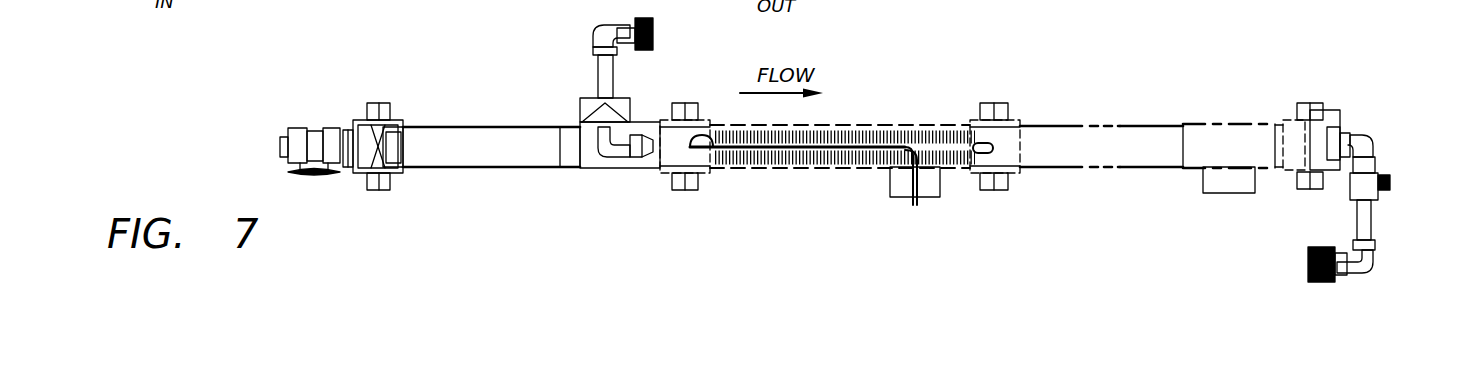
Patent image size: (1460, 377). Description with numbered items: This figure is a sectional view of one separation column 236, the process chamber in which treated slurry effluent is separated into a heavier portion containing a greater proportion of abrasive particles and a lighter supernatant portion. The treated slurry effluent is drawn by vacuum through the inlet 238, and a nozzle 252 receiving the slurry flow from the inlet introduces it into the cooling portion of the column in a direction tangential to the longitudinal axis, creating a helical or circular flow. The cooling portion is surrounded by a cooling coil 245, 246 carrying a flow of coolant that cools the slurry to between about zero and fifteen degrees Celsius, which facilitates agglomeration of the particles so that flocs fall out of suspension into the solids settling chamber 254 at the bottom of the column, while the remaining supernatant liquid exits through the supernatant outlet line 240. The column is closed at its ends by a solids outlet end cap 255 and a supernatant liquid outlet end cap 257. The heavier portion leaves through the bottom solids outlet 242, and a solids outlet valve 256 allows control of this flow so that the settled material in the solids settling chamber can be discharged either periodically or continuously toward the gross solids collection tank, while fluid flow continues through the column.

The separation column 236 is at (972, 82).
The inlet 238 is at (595, 35).
The supernatant outlet line 240 is at (1375, 226).
The bottom solids outlet 242 is at (348, 130).
The spring 245 is at (852, 118).
The rod 246 is at (832, 168).
The nozzle 252 is at (640, 160).
The solids settling chamber 254 is at (472, 137).
The solids outlet end cap 255 is at (372, 103).
The solids outlet valve 256 is at (298, 128).
The supernatant liquid outlet end cap 257 is at (1323, 122).